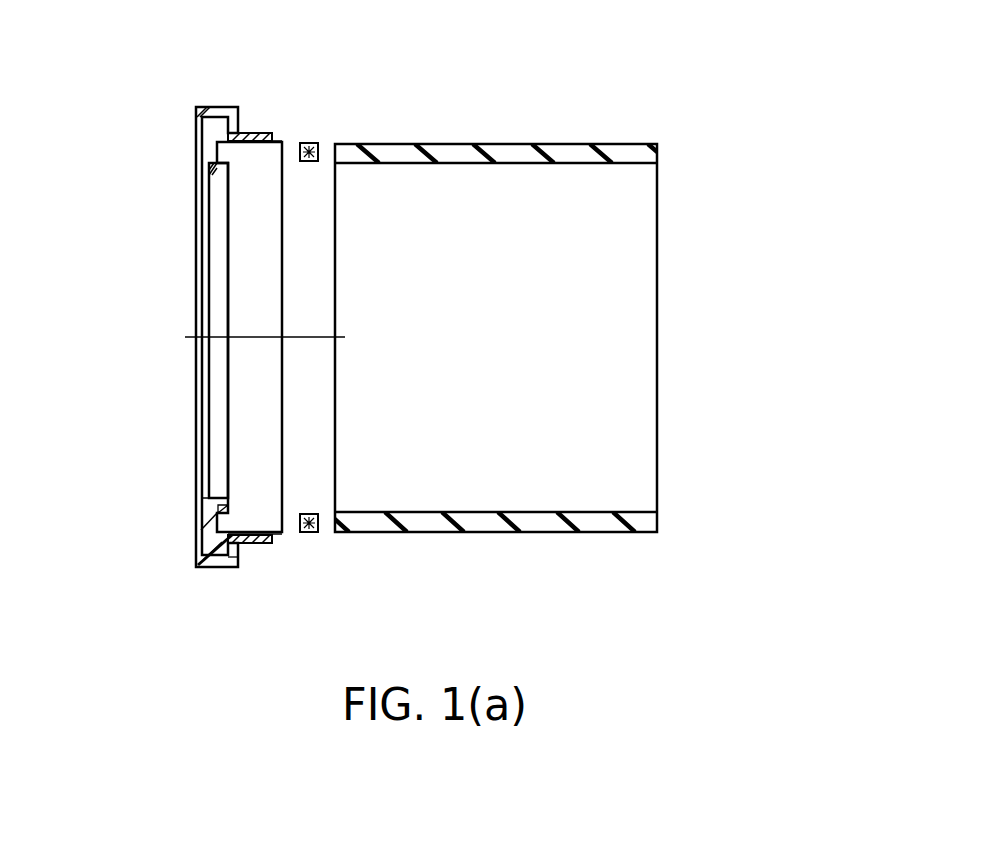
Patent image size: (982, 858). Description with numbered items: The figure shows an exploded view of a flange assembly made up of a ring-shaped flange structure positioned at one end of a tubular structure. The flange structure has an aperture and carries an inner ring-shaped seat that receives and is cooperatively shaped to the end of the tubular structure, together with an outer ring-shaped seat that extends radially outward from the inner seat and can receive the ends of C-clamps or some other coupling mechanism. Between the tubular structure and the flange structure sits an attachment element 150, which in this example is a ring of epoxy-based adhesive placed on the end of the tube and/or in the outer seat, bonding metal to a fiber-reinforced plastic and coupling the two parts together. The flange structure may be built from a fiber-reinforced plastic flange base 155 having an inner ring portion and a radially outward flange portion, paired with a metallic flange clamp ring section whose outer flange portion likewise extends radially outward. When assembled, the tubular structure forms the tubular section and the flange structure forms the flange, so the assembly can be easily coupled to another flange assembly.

The attachment element 150 is at (303, 108).
The flange base 155 is at (226, 118).